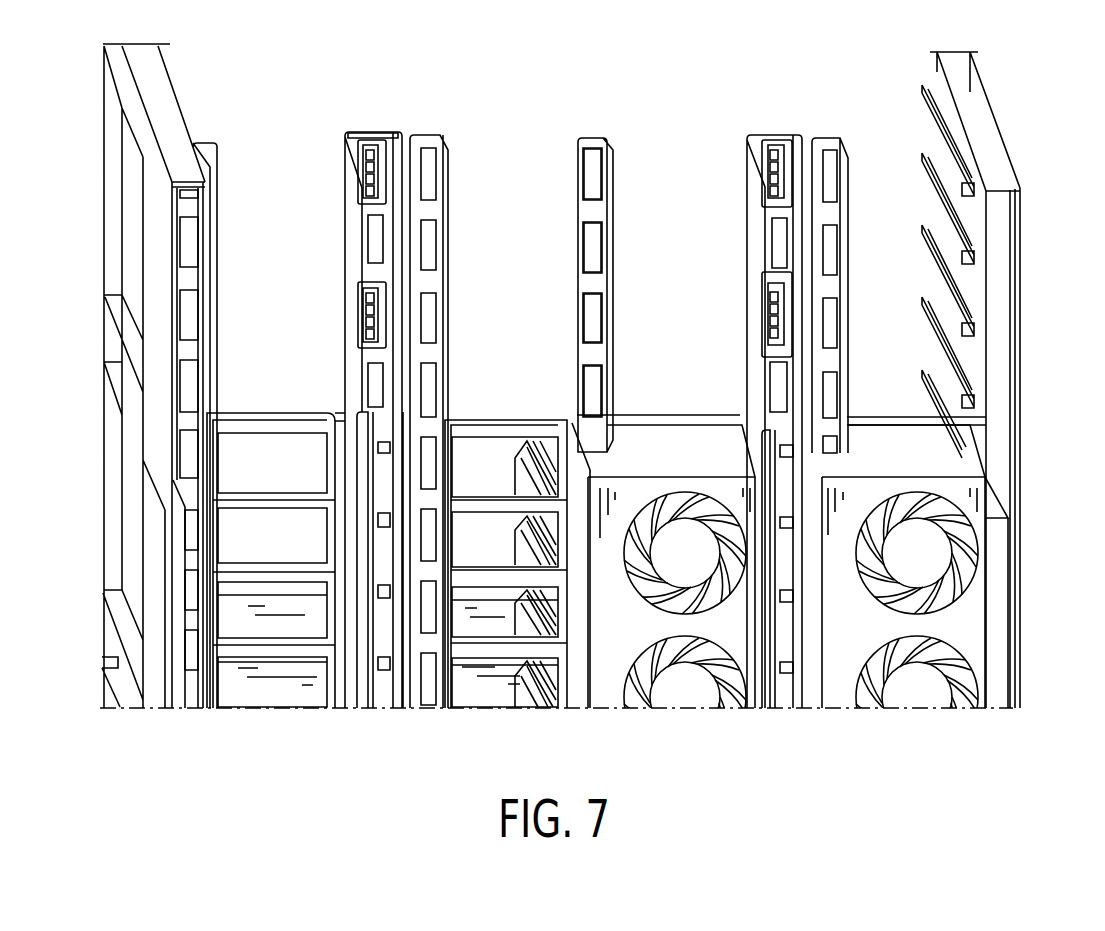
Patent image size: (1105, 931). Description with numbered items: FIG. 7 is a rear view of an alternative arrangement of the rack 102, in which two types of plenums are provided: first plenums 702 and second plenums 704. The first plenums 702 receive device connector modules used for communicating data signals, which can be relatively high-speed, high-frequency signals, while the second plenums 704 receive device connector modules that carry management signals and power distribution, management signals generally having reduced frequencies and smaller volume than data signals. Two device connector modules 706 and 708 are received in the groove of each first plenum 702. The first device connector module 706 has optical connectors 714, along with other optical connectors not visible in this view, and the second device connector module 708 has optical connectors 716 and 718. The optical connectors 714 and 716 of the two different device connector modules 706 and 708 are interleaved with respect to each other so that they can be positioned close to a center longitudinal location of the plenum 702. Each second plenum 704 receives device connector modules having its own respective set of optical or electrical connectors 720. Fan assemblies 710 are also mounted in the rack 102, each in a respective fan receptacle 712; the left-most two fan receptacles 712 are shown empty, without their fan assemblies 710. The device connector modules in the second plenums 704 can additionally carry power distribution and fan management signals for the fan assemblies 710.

The rack 102 is at (984, 82).
The first plenum 702 is at (349, 203).
The second plenum 704 is at (197, 138).
The first device connector module 706 is at (367, 131).
The second device connector module 708 is at (396, 132).
The fan assembly 710 is at (840, 690).
The fan receptacle 712 is at (485, 690).
The optical connector 714 is at (358, 148).
The optical connector 716 is at (373, 238).
The optical connector 718 is at (391, 665).
The optical or electrical connector 720 is at (588, 377).